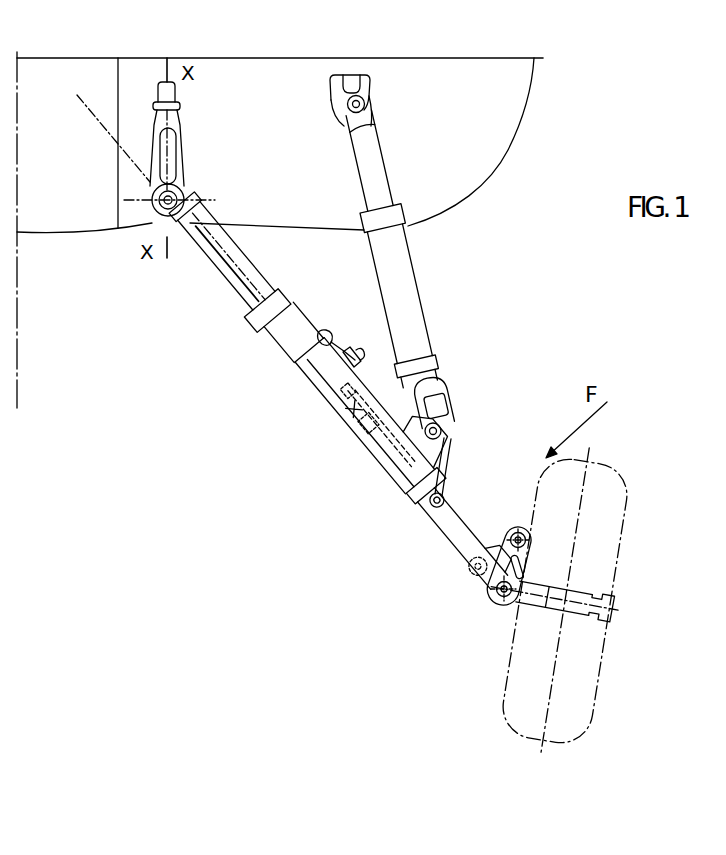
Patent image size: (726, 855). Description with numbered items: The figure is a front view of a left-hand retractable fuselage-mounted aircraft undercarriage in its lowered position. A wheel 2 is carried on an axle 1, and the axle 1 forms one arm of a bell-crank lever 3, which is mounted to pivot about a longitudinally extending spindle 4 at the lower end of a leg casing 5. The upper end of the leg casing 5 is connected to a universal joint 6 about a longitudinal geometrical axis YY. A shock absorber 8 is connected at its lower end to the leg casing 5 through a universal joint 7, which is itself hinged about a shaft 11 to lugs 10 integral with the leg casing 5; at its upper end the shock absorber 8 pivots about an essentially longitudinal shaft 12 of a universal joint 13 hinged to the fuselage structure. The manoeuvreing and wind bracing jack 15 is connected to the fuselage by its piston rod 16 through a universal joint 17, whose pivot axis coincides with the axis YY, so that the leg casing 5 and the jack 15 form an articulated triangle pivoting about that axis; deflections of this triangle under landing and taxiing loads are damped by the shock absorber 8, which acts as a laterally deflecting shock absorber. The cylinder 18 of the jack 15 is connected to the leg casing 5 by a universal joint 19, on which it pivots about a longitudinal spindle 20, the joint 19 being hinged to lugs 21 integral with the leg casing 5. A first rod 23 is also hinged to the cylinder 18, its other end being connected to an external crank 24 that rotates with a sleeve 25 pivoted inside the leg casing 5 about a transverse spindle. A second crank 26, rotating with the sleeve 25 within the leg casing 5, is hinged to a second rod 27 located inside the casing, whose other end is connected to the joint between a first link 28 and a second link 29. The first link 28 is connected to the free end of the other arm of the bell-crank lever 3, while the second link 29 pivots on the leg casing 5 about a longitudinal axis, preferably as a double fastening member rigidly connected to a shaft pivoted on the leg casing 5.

The axle 1 is at (580, 617).
The wheel 2 is at (610, 526).
The bell-crank lever 3 is at (526, 562).
The spindle 4 is at (503, 598).
The leg casing 5 is at (393, 481).
The universal joint 6 is at (172, 120).
The universal joint 7 is at (434, 413).
The shock absorber 8 is at (405, 272).
The lugs 10 is at (442, 455).
The shaft 11 is at (441, 431).
The shaft 12 is at (366, 106).
The universal joint 13 is at (372, 86).
The manoeuvreing and wind bracing jack 15 is at (240, 332).
The piston rod 16 is at (226, 220).
The universal joint 17 is at (161, 162).
The cylinder 18 is at (316, 376).
The universal joint 19 is at (462, 540).
The spindle 20 is at (431, 503).
The lugs 21 is at (470, 524).
The first rod 23 is at (337, 350).
The external crank 24 is at (360, 358).
The sleeve 25 is at (346, 400).
The second crank 26 is at (332, 440).
The second rod 27 is at (385, 442).
The first link 28 is at (512, 532).
The second link 29 is at (480, 572).